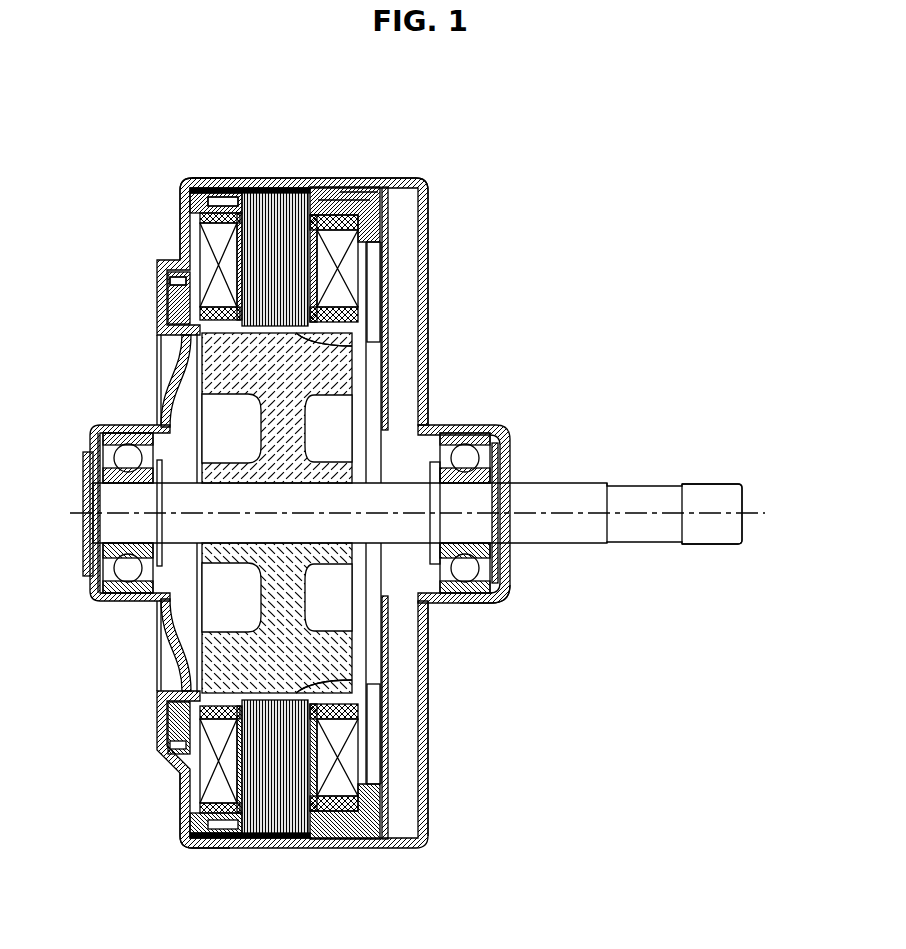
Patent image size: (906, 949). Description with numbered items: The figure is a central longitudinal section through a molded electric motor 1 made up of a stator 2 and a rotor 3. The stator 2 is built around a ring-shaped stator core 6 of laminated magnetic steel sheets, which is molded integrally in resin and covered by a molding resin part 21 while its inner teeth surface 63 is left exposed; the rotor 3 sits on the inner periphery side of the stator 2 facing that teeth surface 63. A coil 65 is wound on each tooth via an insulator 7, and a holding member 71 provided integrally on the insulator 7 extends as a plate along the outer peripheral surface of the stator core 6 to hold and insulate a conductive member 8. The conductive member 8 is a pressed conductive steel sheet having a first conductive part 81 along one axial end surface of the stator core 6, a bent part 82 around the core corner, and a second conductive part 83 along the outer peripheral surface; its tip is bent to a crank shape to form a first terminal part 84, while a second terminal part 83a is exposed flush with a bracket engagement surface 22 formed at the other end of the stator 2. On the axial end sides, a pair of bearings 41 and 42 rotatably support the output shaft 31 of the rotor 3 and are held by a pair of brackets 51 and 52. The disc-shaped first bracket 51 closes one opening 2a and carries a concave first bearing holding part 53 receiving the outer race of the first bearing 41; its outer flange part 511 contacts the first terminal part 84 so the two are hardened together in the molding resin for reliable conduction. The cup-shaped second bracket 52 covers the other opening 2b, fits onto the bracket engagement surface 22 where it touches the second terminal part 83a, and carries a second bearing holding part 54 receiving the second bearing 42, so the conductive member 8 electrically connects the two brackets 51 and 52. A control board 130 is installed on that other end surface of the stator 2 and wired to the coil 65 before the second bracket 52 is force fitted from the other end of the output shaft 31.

The electric motor 1 is at (552, 278).
The stator 2 is at (172, 207).
The one opening of the stator 2a is at (165, 677).
The other opening of the stator 2b is at (400, 678).
The rotor 3 is at (358, 395).
The stator core 6 is at (316, 278).
The insulator 7 is at (392, 200).
The conductive member 8 is at (224, 178).
The molding resin part 21 is at (190, 848).
The bracket engagement surface 22 is at (377, 178).
The output shaft 31 is at (707, 492).
The first bearing 41 is at (97, 468).
The second bearing 42 is at (512, 572).
The first bracket 51 is at (163, 378).
The second bracket 52 is at (512, 440).
The first bearing holding part 53 is at (108, 600).
The second bearing holding part 54 is at (492, 606).
The teeth surface 63 is at (380, 350).
The coil 65 is at (367, 257).
The holding member 71 is at (275, 186).
The first conductive part 81 is at (183, 222).
The bent part 82 is at (184, 180).
The second conductive part 83 is at (305, 187).
The second terminal part 83a is at (344, 187).
The first terminal part 84 is at (168, 272).
The control board 130 is at (390, 780).
The flange part 511 is at (172, 290).